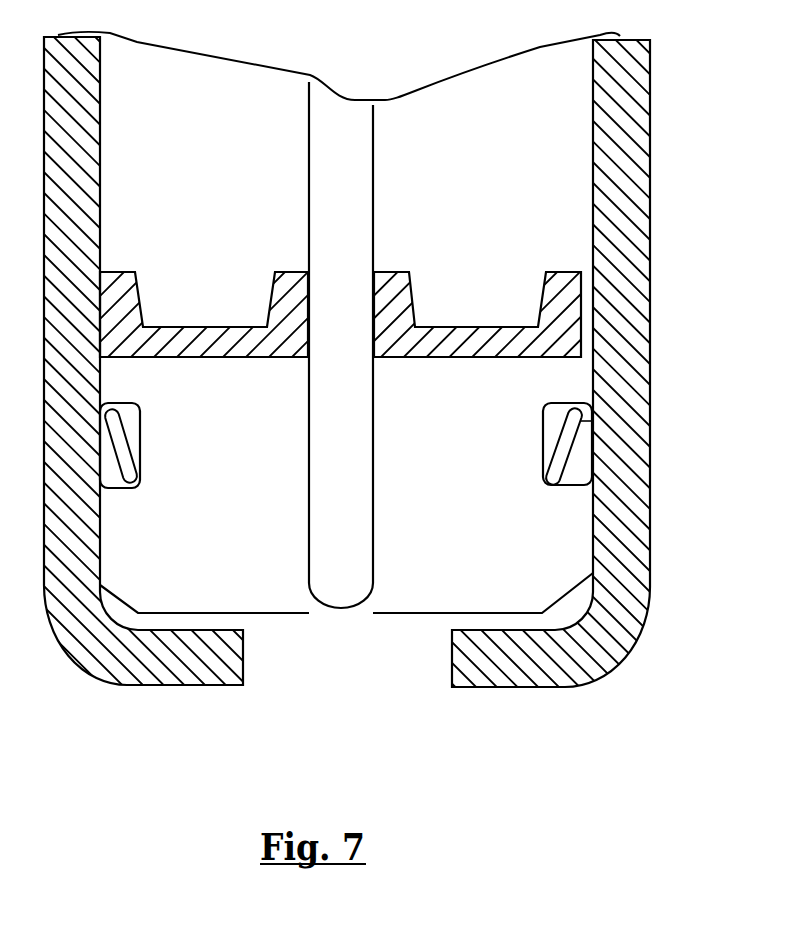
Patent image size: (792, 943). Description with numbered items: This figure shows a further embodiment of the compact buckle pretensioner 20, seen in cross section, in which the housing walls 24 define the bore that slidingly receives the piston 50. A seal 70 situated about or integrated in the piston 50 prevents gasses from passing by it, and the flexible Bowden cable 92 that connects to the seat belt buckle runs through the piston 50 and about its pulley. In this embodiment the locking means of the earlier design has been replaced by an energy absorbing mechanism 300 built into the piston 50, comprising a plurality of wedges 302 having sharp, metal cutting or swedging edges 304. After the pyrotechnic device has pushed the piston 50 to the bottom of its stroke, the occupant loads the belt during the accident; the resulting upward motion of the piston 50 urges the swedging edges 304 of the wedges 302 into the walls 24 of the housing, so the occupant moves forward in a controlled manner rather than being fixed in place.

The compact buckle pretensioner 20 is at (718, 71).
The walls 24 is at (592, 371).
The slidable piston 50 is at (218, 475).
The seal 70 is at (145, 345).
The Bowden cable 92 is at (355, 192).
The energy absorbing mechanism 300 is at (600, 410).
The wedges 302 is at (565, 448).
The cutting or swedging edges 304 is at (582, 421).